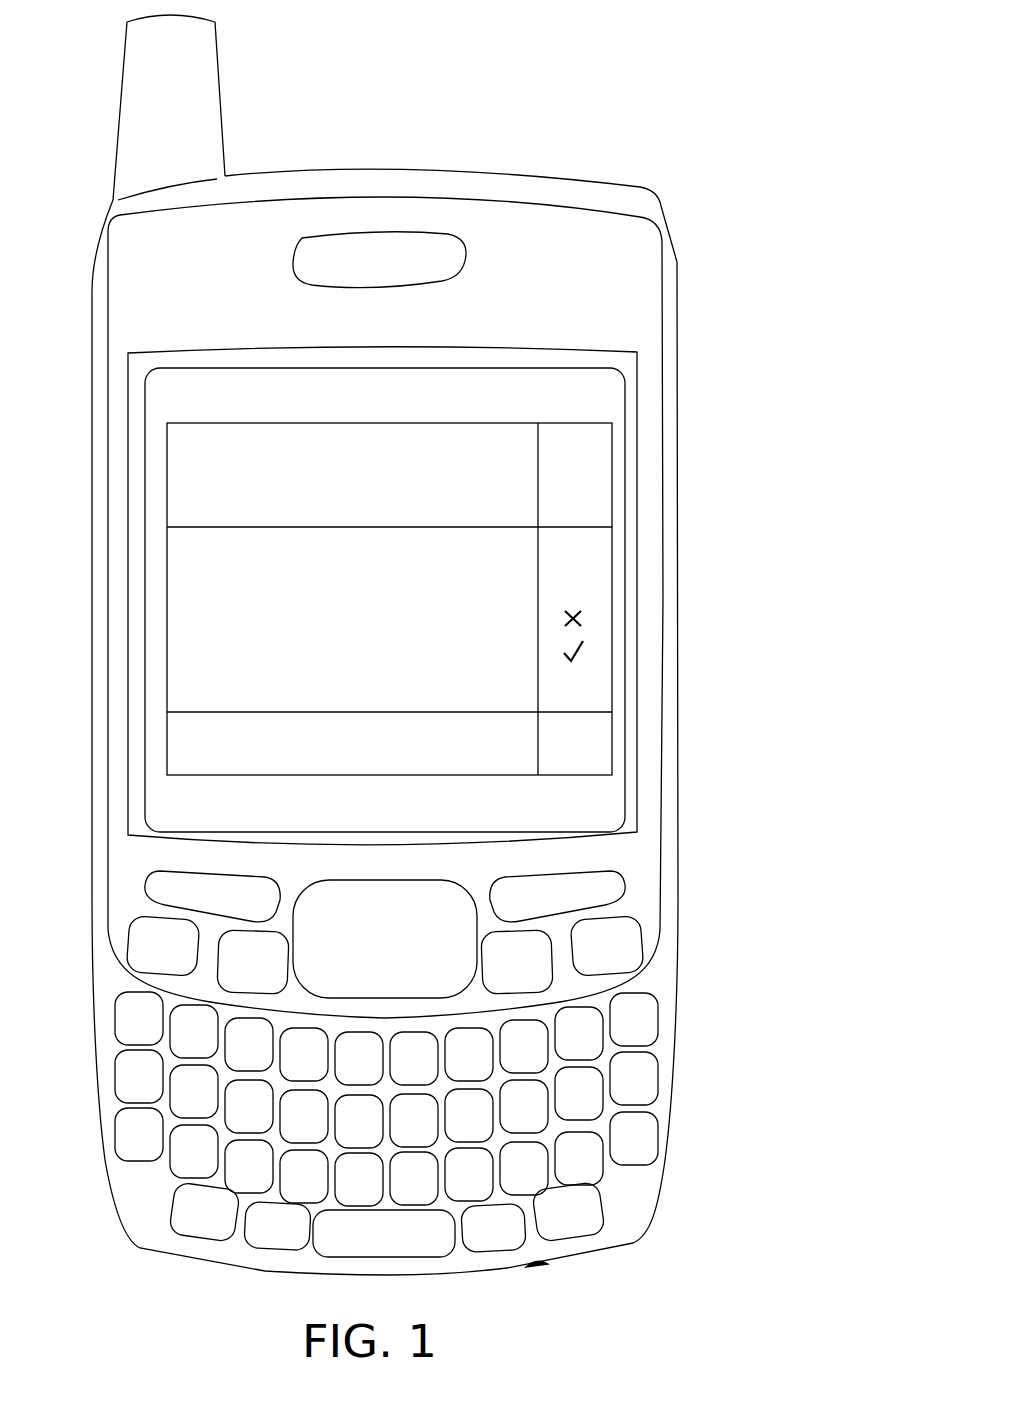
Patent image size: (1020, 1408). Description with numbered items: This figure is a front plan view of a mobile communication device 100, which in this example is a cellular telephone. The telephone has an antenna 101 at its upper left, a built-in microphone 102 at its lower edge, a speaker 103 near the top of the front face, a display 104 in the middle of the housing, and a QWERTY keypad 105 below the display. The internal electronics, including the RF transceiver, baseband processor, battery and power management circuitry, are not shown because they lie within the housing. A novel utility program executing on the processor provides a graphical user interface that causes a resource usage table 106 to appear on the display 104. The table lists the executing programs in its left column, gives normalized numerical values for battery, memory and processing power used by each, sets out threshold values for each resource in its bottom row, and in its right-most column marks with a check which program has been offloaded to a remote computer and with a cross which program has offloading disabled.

The mobile communication device 100 is at (517, 177).
The antenna 101 is at (190, 112).
The built-in microphone 102 is at (541, 1284).
The speaker 103 is at (357, 270).
The display 104 is at (625, 403).
The QWERTY keypad 105 is at (693, 980).
The resource usage table 106 is at (612, 460).